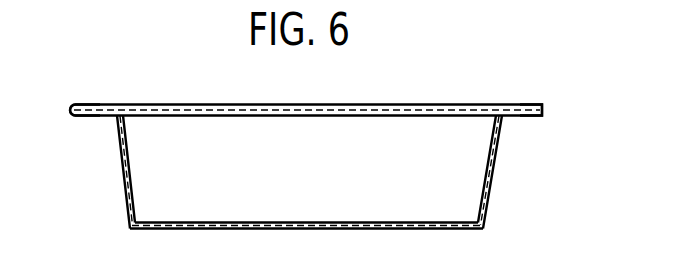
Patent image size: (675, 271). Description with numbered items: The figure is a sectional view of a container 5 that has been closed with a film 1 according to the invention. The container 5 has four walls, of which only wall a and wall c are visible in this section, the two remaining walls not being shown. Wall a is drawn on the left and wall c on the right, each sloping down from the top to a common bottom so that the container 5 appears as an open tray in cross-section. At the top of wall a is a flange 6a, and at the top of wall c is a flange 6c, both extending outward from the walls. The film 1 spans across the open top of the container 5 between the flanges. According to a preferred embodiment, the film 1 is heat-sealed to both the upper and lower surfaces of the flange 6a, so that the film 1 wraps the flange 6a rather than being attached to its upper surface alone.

The film 1 is at (247, 104).
The container 5 is at (339, 172).
The flange 6a is at (98, 121).
The flange 6c is at (521, 118).
The wall a is at (133, 168).
The wall c is at (478, 173).